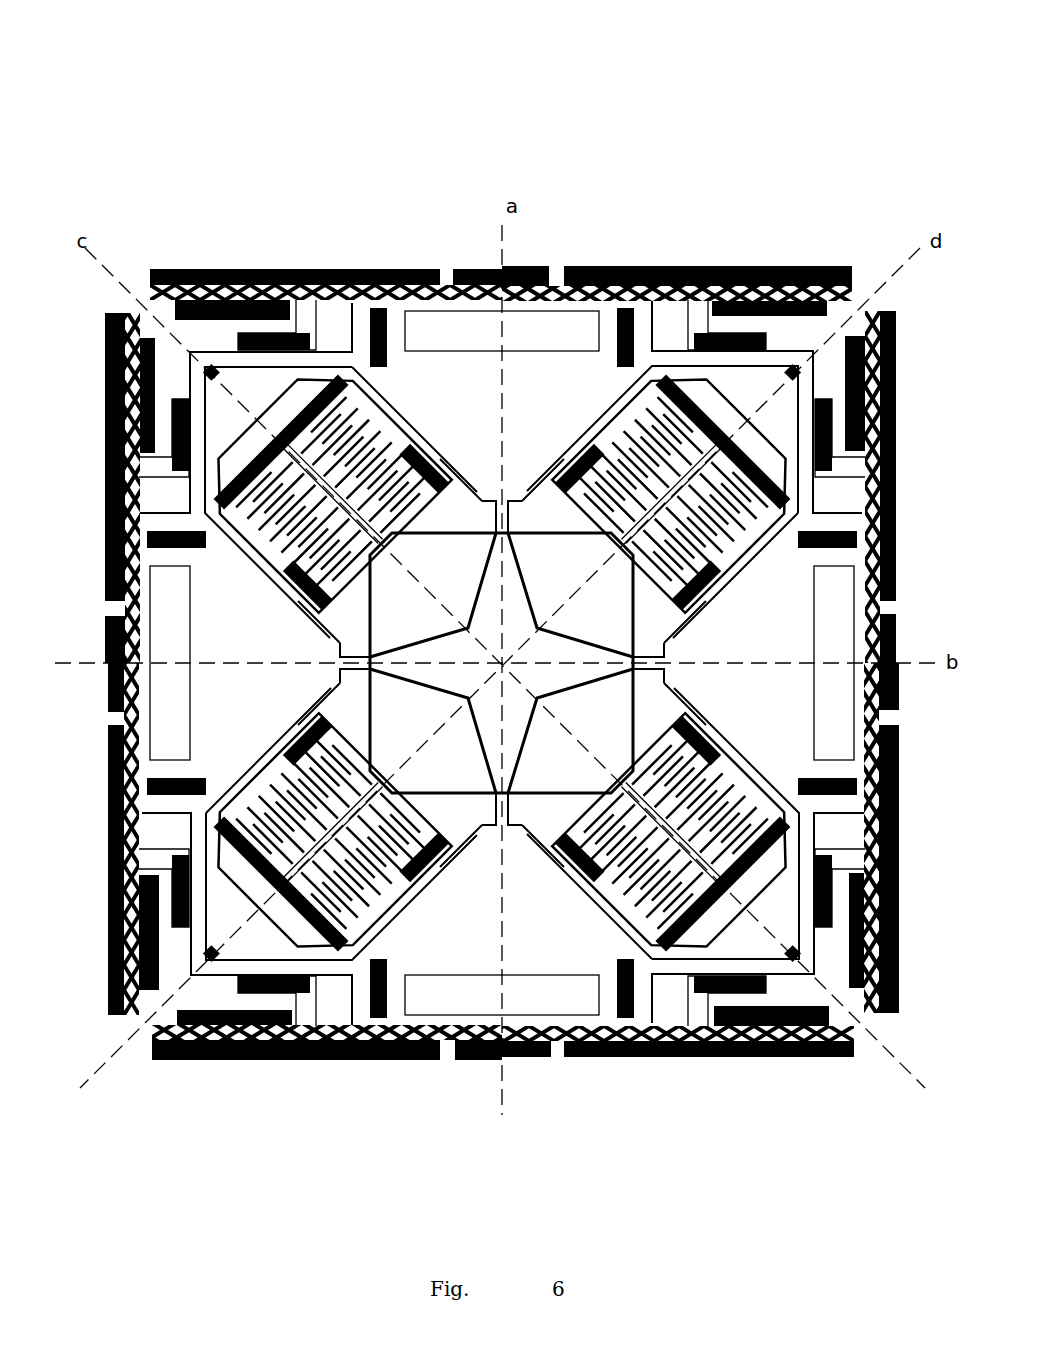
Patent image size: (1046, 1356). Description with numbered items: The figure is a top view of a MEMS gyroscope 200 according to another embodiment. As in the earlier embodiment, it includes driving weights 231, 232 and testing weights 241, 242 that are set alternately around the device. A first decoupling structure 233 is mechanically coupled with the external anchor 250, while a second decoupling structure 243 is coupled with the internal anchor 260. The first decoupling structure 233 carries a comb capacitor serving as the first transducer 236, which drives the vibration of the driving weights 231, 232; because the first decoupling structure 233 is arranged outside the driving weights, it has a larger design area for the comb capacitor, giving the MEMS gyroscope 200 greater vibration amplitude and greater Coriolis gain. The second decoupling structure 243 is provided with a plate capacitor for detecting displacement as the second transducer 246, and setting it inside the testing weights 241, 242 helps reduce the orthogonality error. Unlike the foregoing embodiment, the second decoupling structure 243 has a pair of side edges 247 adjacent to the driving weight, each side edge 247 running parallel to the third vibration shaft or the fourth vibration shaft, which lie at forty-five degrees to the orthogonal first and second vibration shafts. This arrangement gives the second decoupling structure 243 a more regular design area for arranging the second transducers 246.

The MEMS gyroscope 200 is at (497, 42).
The driving weight 231 is at (400, 322).
The driving weight 232 is at (220, 627).
The first decoupling structure 233 is at (168, 312).
The first transducer 236 is at (210, 270).
The testing weight 241 is at (757, 938).
The testing weight 242 is at (253, 940).
The second decoupling structure 243 is at (615, 268).
The second transducer 246 is at (790, 437).
The side edge 247 is at (757, 537).
The external anchor 250 is at (338, 328).
The internal anchor 260 is at (690, 945).